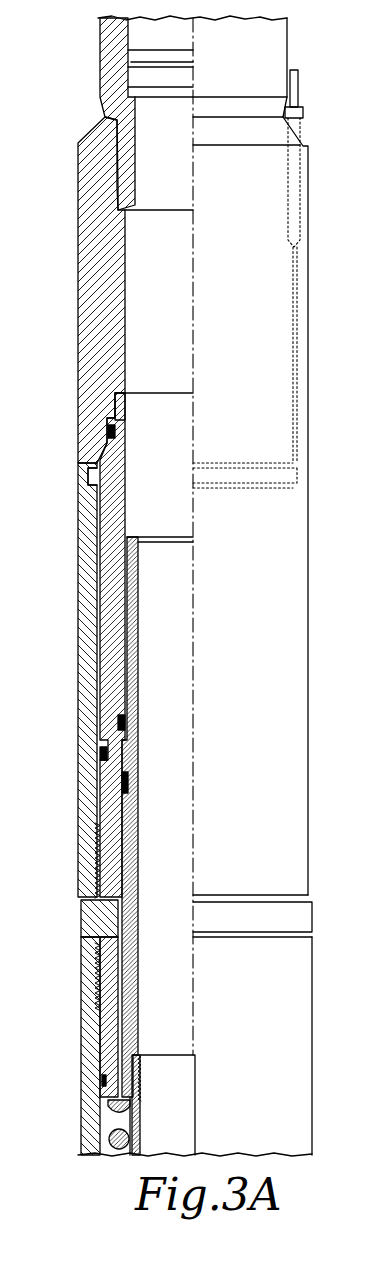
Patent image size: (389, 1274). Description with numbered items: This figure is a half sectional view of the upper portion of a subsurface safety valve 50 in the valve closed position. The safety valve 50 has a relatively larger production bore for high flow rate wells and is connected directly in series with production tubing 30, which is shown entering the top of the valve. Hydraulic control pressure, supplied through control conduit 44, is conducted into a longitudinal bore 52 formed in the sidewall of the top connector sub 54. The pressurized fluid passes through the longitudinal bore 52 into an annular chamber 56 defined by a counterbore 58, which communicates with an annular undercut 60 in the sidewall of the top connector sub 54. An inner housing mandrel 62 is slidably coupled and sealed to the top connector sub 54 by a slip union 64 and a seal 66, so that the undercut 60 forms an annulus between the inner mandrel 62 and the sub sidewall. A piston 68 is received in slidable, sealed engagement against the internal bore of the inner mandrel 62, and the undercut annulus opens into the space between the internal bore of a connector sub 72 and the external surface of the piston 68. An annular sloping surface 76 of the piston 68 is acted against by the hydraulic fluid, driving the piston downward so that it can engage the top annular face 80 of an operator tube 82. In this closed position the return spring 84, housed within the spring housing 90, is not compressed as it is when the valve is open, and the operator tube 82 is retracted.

The production tubing 30 is at (112, 50).
The control conduit 44 is at (302, 88).
The subsurface safety valve 50 is at (340, 238).
The longitudinal bore 52 is at (295, 293).
The top connector sub 54 is at (85, 233).
The annular chamber 56 is at (300, 478).
The counterbore 58 is at (90, 480).
The annular undercut 60 is at (92, 567).
The inner housing mandrel 62 is at (110, 631).
The slip union 64 is at (112, 413).
The seal 66 is at (108, 434).
The piston 68 is at (143, 997).
The connector sub 72 is at (82, 912).
The annular sloping surface 76 is at (129, 758).
The top annular face 80 is at (170, 1053).
The operator tube 82 is at (140, 1138).
The return spring 84 is at (108, 1142).
The spring housing 90 is at (85, 1103).